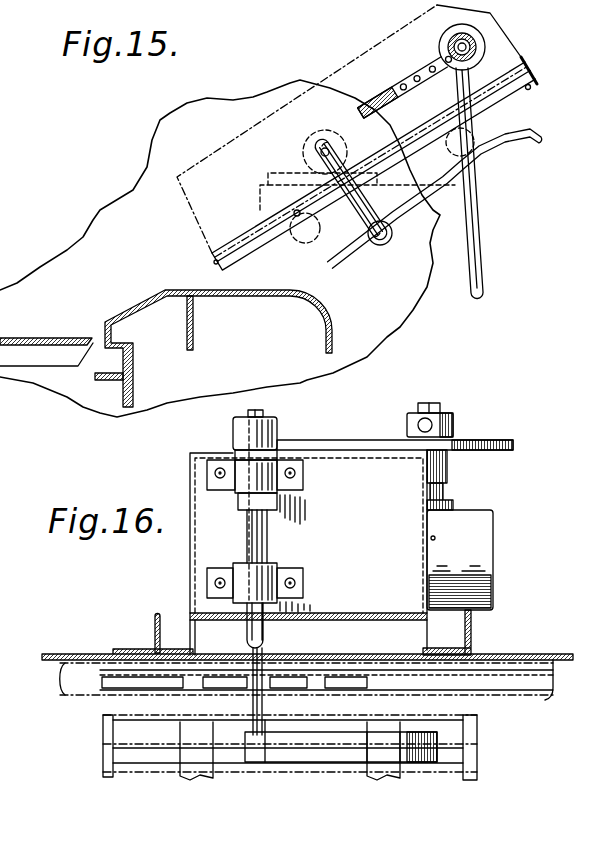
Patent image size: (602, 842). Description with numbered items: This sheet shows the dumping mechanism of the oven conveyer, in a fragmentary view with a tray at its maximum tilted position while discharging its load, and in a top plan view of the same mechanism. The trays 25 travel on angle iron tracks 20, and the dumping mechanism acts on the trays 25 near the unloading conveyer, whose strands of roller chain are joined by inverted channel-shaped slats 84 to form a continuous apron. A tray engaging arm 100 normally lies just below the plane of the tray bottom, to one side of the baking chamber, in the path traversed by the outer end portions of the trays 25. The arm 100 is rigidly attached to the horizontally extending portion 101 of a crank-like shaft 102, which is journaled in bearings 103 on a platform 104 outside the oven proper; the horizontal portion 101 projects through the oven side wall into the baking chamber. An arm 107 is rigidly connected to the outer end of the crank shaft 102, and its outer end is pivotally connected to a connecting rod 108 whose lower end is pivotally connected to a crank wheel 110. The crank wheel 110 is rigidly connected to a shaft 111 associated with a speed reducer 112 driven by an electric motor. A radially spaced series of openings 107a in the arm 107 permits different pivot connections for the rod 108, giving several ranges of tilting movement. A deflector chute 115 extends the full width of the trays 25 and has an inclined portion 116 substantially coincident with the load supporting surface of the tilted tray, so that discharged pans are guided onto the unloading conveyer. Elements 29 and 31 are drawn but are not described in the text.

In FIG. 16, the angle iron tracks 20 is at (554, 694).
In FIG. 15, the trays 25 is at (367, 58).
In FIG. 16, the trays 25 is at (458, 760).
In FIG. 15, the guide rail 29 is at (249, 238).
In FIG. 15, the roller bracket 31 is at (292, 257).
In FIG. 16, the roller bracket 31 is at (192, 708).
In FIG. 15, the inverted channel-shaped slats 84 is at (42, 316).
In FIG. 15, the tray engaging arm 100 is at (393, 227).
In FIG. 16, the tray engaging arm 100 is at (354, 737).
In FIG. 15, the horizontally extending portion 101 is at (376, 245).
In FIG. 16, the horizontally extending portion 101 is at (264, 666).
In FIG. 15, the crank-like shaft 102 is at (316, 148).
In FIG. 16, the crank-like shaft 102 is at (266, 546).
In FIG. 15, the bearings 103 is at (305, 153).
In FIG. 16, the bearings 103 is at (250, 488).
In FIG. 15, the platform 104 is at (268, 177).
In FIG. 16, the platform 104 is at (352, 466).
In FIG. 15, the arm 107 is at (381, 97).
In FIG. 16, the arm 107 is at (311, 441).
In FIG. 15, the openings 107a is at (418, 75).
In FIG. 15, the connecting rod 108 is at (484, 241).
In FIG. 16, the connecting rod 108 is at (455, 413).
In FIG. 16, the crank wheel 110 is at (472, 439).
In FIG. 16, the shaft 111 is at (448, 490).
In FIG. 16, the speed reducer 112 is at (483, 533).
In FIG. 15, the deflector chute 115 is at (256, 297).
In FIG. 16, the deflector chute 115 is at (347, 668).
In FIG. 15, the inclined portion 116 is at (150, 298).